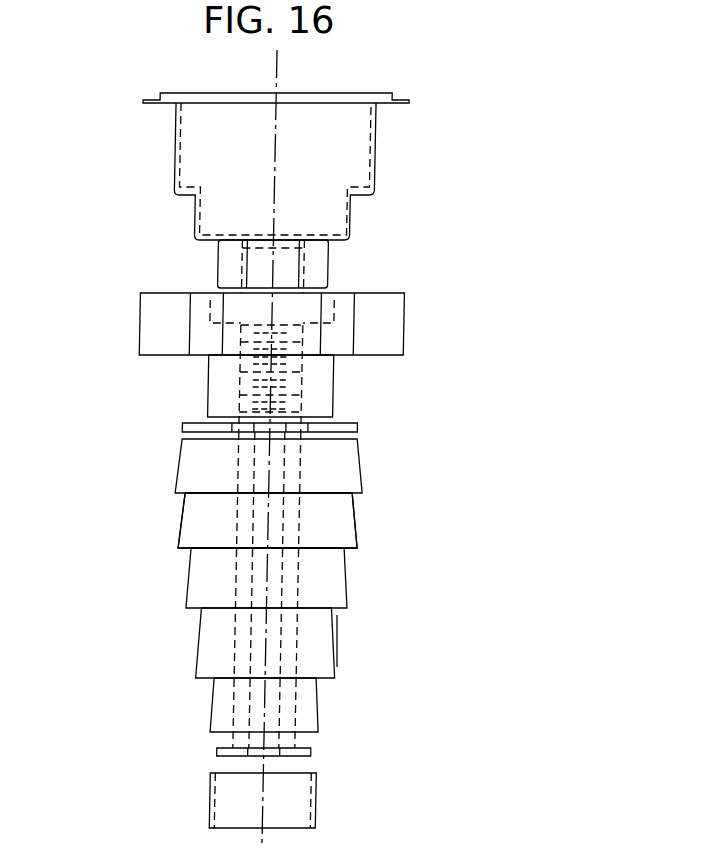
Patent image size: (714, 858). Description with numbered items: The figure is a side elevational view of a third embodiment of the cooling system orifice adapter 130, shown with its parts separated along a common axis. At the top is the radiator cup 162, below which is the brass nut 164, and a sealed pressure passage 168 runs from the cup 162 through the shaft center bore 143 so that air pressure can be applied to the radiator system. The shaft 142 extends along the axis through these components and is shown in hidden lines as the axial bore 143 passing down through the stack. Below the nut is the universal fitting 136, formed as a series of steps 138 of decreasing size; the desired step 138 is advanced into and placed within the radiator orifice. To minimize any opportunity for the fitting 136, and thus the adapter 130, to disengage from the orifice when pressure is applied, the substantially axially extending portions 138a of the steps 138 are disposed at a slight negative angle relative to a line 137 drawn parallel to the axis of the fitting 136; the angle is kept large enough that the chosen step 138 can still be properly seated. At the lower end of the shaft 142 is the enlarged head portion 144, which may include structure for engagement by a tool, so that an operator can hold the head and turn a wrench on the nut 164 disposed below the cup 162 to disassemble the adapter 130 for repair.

The adapter 130 is at (466, 218).
The cup 162 is at (380, 140).
The sealed pressure passage 168 is at (292, 237).
The brass nut 164 is at (333, 266).
The shaft center bore 143 is at (292, 460).
The universal fitting 136 is at (367, 540).
The axially extending portion 138a is at (190, 528).
The step 138 is at (198, 596).
The line 137 is at (346, 624).
The enlarged head portion 144 is at (229, 750).
The shaft 142 is at (309, 739).